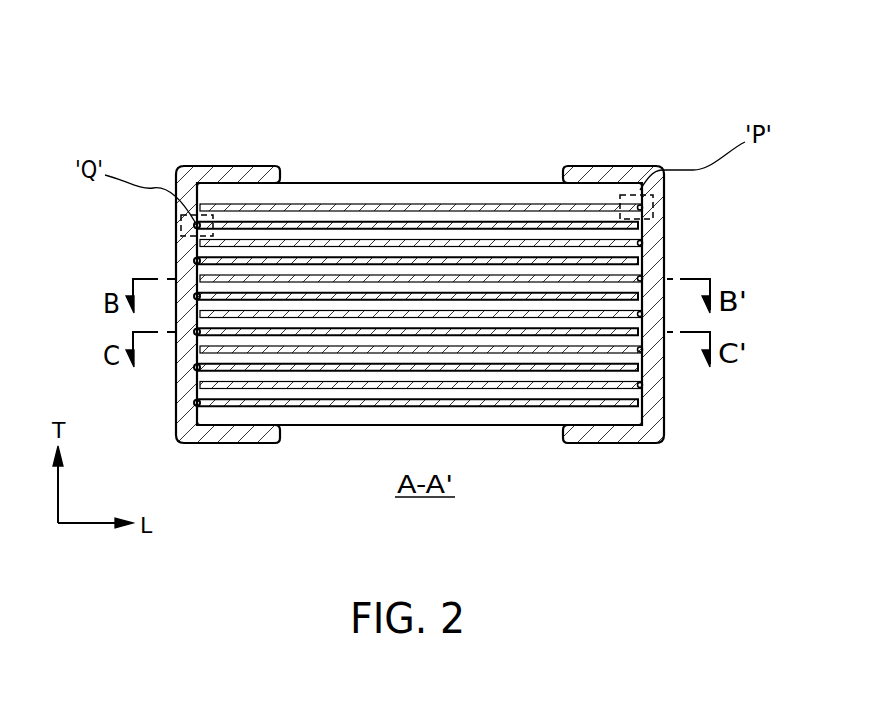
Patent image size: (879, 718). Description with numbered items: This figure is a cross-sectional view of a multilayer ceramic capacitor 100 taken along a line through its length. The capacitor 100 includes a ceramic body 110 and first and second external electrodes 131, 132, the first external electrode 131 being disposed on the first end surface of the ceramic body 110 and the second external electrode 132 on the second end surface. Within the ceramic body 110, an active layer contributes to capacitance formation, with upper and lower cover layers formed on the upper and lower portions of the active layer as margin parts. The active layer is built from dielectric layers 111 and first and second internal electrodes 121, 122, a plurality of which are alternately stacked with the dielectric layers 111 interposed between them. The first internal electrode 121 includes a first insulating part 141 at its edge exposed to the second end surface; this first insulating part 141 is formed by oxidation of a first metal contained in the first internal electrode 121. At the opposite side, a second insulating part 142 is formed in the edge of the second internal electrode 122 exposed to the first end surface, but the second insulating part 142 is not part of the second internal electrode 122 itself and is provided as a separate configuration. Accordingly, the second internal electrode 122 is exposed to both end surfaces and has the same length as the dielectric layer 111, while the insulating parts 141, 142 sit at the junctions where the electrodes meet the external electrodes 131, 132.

The multilayer ceramic capacitor 100 is at (330, 23).
The ceramic body 110 is at (333, 195).
The dielectric layers 111 is at (522, 235).
The first internal electrode 121 is at (395, 207).
The second internal electrode 122 is at (463, 227).
The first external electrode 131 is at (240, 172).
The second external electrode 132 is at (637, 170).
The first insulating part 141 is at (637, 242).
The second insulating part 142 is at (195, 260).